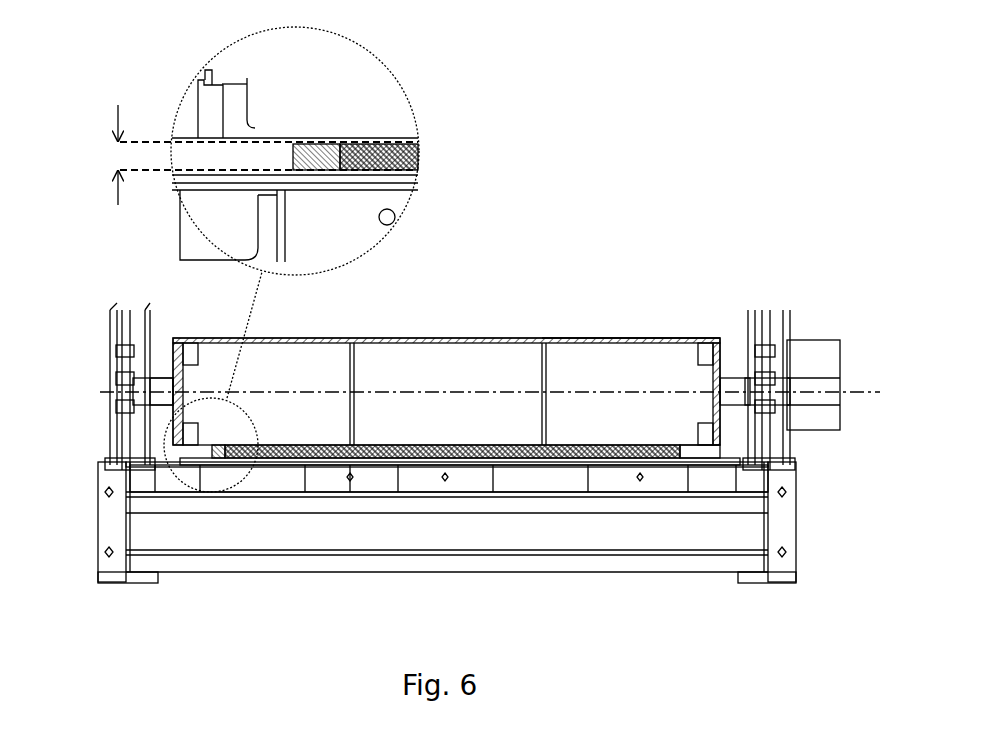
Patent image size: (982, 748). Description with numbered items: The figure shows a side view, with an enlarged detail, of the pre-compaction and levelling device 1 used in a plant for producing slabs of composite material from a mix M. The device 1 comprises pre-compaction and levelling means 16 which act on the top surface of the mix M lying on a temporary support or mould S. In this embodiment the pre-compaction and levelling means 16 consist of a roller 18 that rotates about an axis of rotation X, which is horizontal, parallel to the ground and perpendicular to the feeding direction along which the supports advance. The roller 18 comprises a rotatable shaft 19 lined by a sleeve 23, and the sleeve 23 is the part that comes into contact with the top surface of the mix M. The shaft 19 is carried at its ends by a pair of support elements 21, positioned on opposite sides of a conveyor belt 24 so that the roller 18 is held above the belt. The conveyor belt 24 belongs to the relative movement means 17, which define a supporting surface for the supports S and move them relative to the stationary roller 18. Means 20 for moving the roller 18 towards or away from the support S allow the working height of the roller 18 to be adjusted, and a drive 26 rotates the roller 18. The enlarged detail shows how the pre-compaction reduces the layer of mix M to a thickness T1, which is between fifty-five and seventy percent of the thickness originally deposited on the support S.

The device 1 is at (803, 170).
The pre-compaction and levelling means 16 is at (570, 273).
The relative movement means 17 is at (643, 528).
The roller 18 is at (455, 336).
The rotatable shaft 19 is at (158, 378).
The means for moving the roller 20 is at (797, 305).
The support elements 21 is at (112, 345).
The sleeve 23 is at (690, 338).
The conveyor belt 24 is at (183, 457).
The drive for rotation of the roller 26 is at (836, 340).
The mix M is at (505, 447).
The temporary support or mould S is at (228, 455).
The axis of rotation X is at (600, 392).
The pre-compacted thickness T1 is at (112, 145).